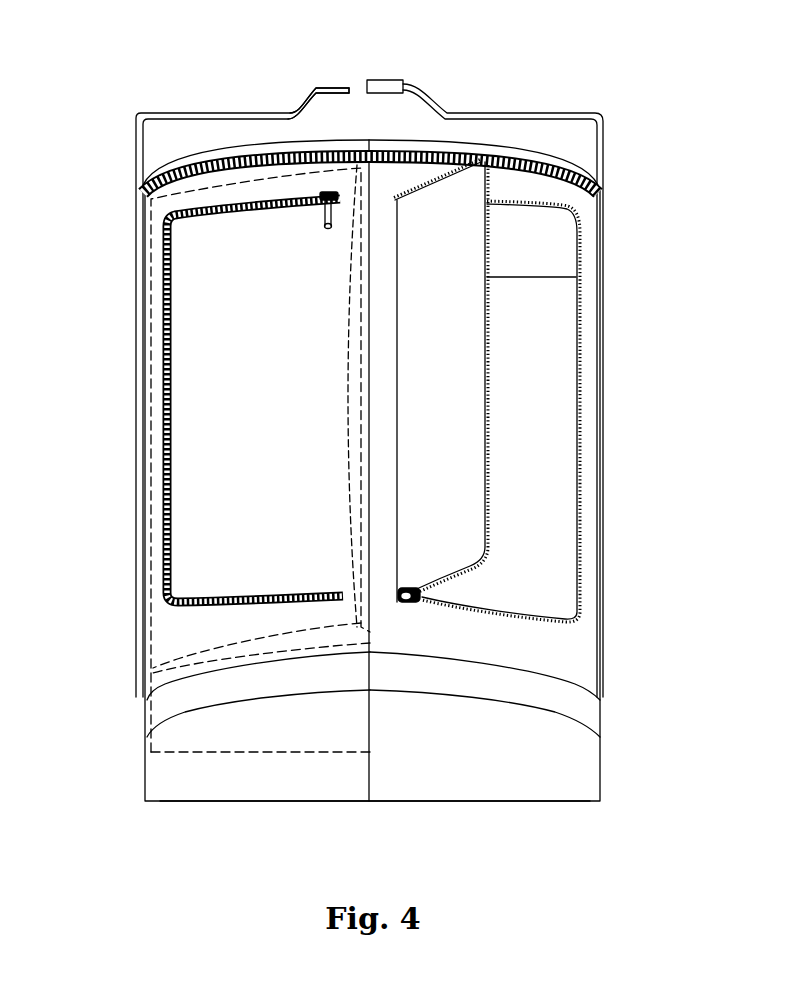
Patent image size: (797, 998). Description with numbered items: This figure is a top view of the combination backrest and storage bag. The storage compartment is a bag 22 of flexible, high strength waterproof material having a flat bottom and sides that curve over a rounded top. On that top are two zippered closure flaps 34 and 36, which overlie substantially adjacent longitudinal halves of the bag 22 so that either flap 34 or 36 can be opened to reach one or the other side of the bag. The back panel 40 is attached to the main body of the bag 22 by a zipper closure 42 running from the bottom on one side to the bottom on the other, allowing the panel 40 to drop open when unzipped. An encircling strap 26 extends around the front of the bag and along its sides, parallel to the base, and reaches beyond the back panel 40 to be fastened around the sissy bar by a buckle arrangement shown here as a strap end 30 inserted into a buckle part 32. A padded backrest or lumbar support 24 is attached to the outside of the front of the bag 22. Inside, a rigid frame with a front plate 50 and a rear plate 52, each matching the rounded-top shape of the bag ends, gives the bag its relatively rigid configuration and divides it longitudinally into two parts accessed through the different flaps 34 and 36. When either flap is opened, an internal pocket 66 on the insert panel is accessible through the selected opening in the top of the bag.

The bag 22 is at (577, 650).
The padded backrest or lumbar support 24 is at (482, 760).
The encircling strap 26 is at (136, 430).
The handle 30 is at (340, 86).
The buckle part 32 is at (395, 80).
The zippered closure flap 34 is at (425, 418).
The zippered closure flap 36 is at (220, 400).
The back panel 40 is at (503, 147).
The zipper closure 42 is at (597, 187).
The front plate 50 is at (180, 647).
The rear plate 52 is at (508, 268).
The pocket 66 is at (350, 347).